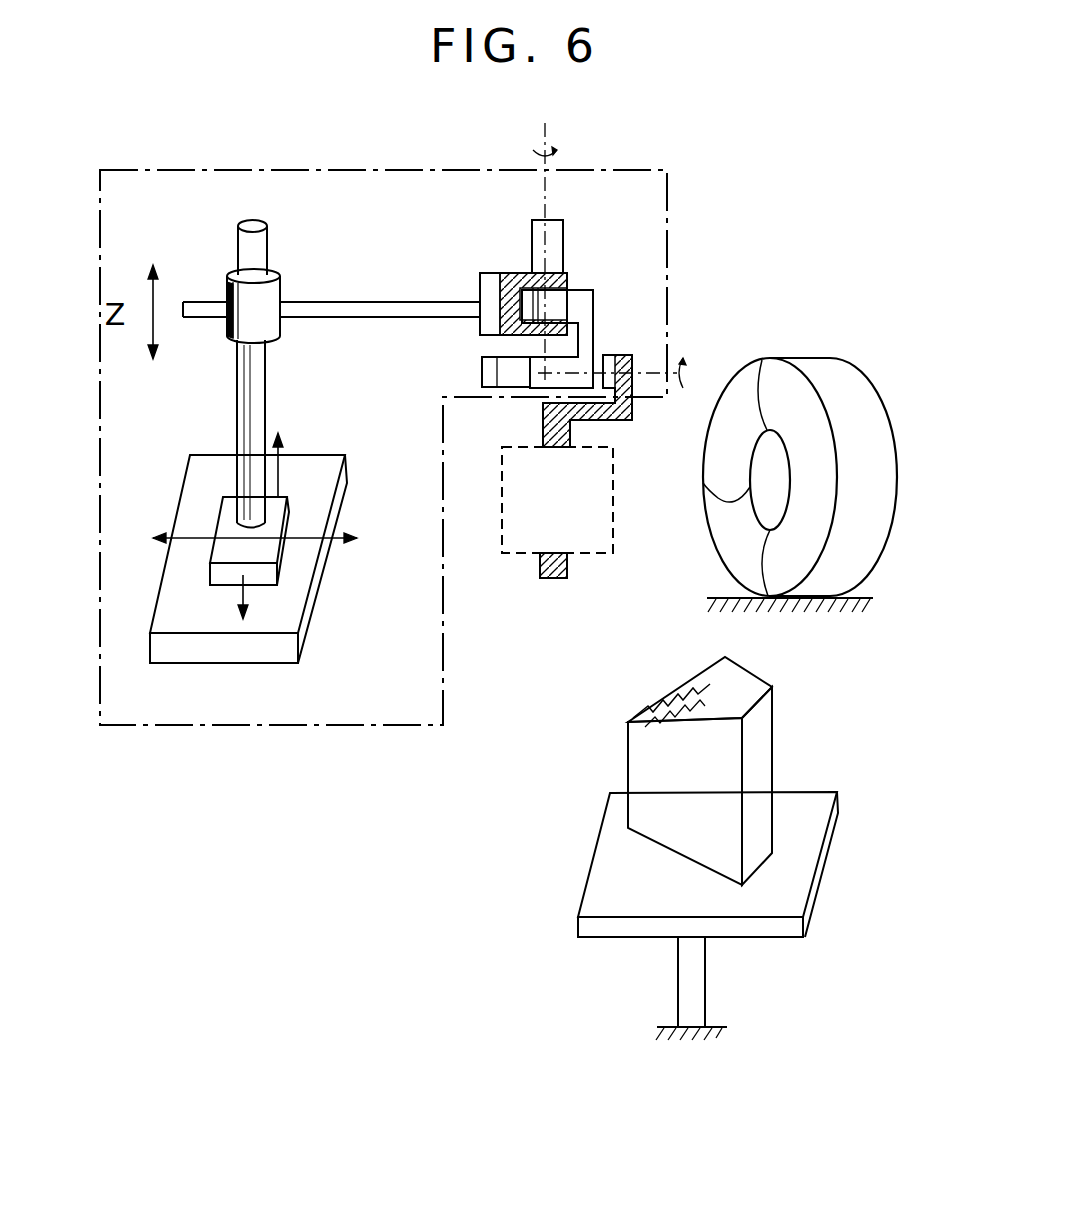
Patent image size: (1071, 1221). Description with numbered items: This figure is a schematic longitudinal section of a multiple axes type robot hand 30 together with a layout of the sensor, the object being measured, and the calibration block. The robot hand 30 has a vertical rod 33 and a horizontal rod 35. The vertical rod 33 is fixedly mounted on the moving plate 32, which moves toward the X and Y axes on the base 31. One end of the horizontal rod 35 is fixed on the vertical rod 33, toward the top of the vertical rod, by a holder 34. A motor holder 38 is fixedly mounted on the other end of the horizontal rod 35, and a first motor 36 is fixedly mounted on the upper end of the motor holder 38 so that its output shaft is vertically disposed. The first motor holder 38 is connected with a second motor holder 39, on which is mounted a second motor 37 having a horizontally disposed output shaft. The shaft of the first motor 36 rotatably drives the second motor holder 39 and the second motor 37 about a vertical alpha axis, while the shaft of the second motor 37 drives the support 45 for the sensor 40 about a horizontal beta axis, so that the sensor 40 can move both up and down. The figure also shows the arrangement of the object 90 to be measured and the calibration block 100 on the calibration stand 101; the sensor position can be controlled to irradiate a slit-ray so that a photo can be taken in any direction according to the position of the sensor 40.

The robot hand 30 is at (380, 726).
The base 31 is at (316, 622).
The moving plate 32 is at (232, 512).
The vertical rod 33 is at (266, 372).
The holder 34 is at (263, 310).
The horizontal rod 35 is at (362, 318).
The first motor 36 is at (549, 222).
The second motor 37 is at (483, 370).
The motor holder 38 is at (511, 275).
The second motor holder 39 is at (580, 293).
The sensor 40 is at (614, 522).
The support 45 is at (624, 366).
The object to be measured 90 is at (818, 356).
The calibration block 100 is at (660, 758).
The calibration stand 101 is at (788, 897).